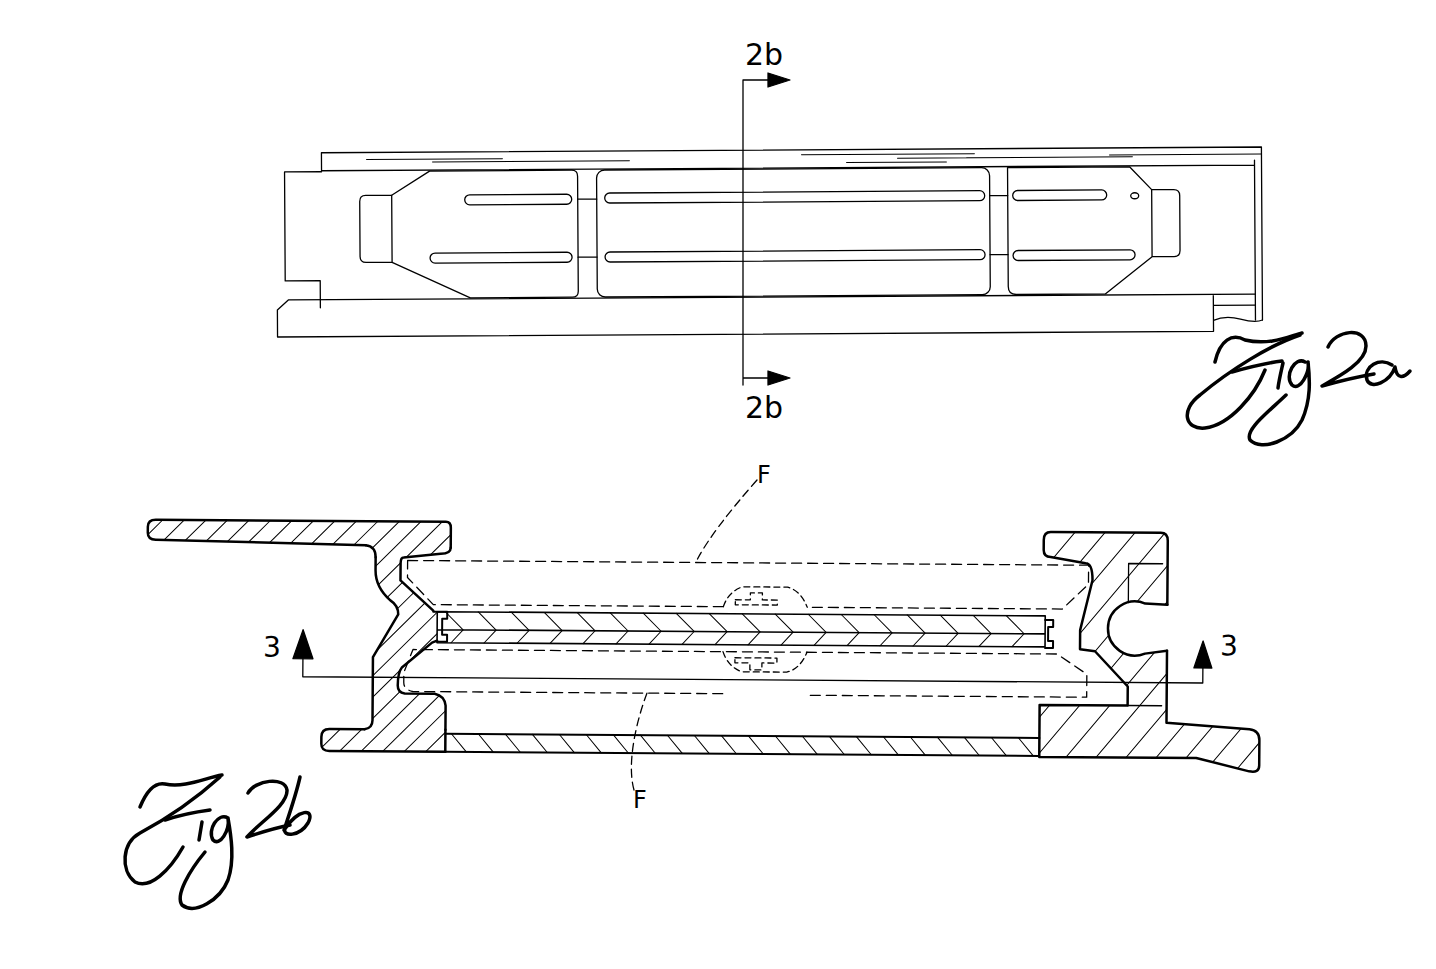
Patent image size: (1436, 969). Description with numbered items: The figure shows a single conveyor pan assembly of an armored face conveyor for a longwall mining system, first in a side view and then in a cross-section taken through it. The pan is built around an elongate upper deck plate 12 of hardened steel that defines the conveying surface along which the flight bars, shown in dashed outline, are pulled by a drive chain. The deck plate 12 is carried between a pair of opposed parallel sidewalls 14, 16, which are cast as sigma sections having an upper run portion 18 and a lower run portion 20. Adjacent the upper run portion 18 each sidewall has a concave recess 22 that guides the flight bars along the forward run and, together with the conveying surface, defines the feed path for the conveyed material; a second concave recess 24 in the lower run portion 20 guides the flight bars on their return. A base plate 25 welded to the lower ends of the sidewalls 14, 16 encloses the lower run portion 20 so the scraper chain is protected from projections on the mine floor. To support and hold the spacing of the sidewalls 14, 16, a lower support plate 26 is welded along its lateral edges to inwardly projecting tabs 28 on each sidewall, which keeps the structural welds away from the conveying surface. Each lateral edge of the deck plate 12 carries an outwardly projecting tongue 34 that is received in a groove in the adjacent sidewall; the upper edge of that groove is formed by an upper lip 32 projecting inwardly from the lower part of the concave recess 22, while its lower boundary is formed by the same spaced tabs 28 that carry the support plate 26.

In FIG. 2B, the upper deck plate 12 is at (883, 625).
In FIG. 2A, the sidewall 14 is at (1200, 152).
In FIG. 2B, the sidewall 14 is at (205, 546).
In FIG. 2A, the sidewall 16 is at (1228, 207).
In FIG. 2B, the sidewall 16 is at (1125, 540).
In FIG. 2B, the upper run portion 18 is at (378, 576).
In FIG. 2B, the lower run portion 20 is at (382, 707).
In FIG. 2B, the concave recess 22 is at (451, 547).
In FIG. 2B, the concave recess 24 is at (395, 746).
In FIG. 2B, the base plate 25 is at (831, 756).
In FIG. 2B, the lower support plate 26 is at (985, 648).
In FIG. 2B, the inwardly projecting tab 28 is at (438, 636).
In FIG. 2B, the upper lip 32 is at (436, 613).
In FIG. 2B, the tongue 34 is at (1113, 629).